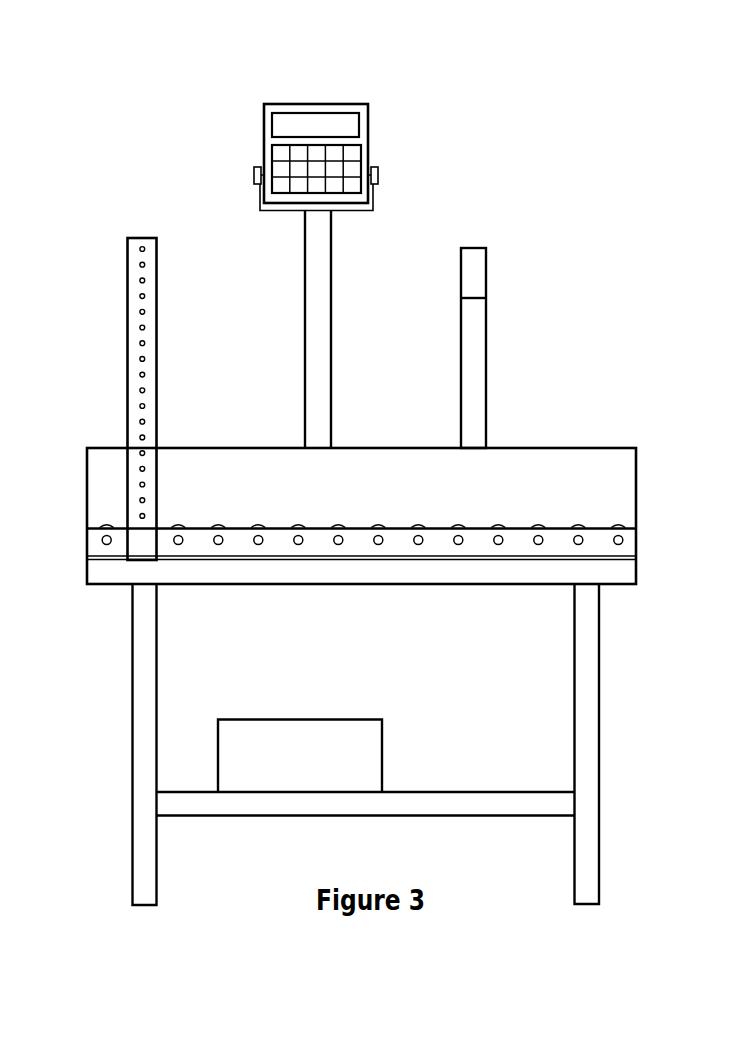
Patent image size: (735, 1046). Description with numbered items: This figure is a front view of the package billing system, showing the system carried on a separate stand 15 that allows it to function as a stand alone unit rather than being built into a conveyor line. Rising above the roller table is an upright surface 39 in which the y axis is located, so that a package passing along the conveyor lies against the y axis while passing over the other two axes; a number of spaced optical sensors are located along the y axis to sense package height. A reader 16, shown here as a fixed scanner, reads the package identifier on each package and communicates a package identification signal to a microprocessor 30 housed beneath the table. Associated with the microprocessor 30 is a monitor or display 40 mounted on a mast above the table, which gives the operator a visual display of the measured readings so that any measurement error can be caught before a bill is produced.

The monitor or display 40 is at (369, 128).
The y axis y is at (126, 291).
The reader 16 is at (480, 260).
The upright surface 39 is at (620, 470).
The stand 15 is at (585, 690).
The microprocessor 30 is at (315, 732).